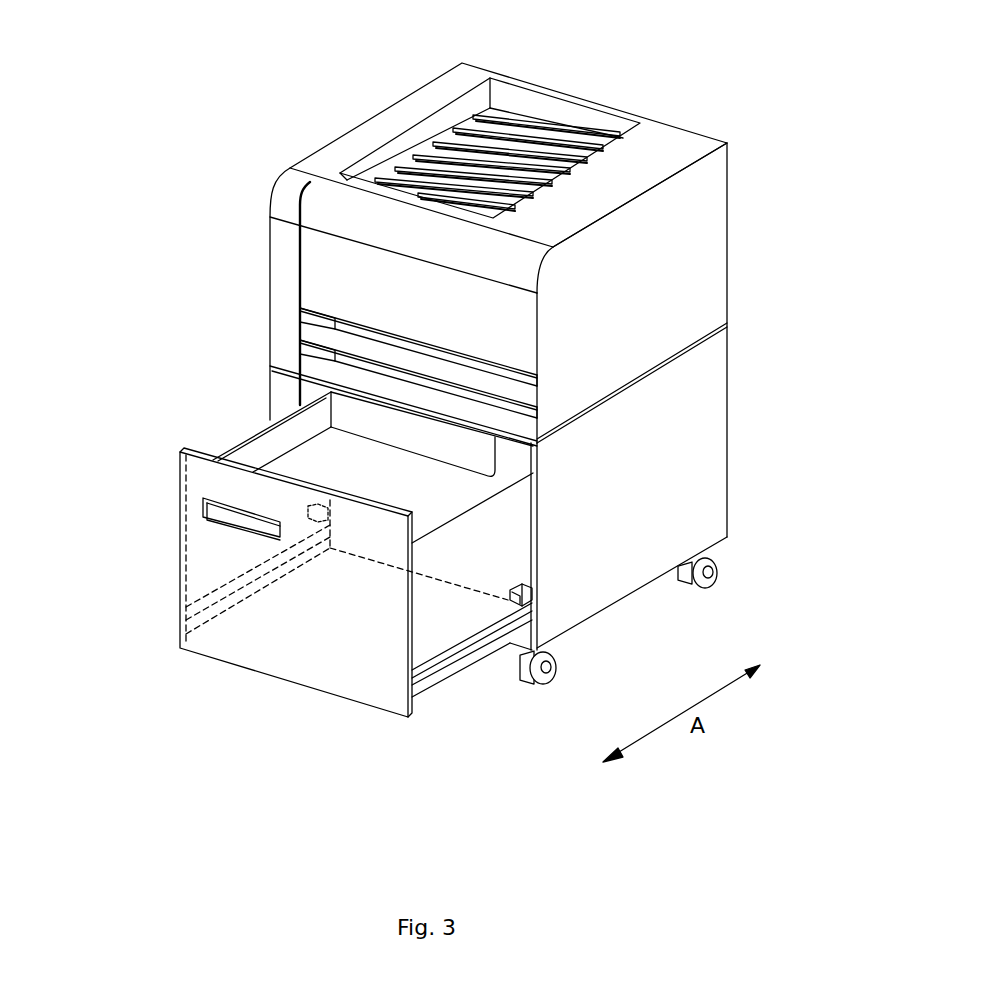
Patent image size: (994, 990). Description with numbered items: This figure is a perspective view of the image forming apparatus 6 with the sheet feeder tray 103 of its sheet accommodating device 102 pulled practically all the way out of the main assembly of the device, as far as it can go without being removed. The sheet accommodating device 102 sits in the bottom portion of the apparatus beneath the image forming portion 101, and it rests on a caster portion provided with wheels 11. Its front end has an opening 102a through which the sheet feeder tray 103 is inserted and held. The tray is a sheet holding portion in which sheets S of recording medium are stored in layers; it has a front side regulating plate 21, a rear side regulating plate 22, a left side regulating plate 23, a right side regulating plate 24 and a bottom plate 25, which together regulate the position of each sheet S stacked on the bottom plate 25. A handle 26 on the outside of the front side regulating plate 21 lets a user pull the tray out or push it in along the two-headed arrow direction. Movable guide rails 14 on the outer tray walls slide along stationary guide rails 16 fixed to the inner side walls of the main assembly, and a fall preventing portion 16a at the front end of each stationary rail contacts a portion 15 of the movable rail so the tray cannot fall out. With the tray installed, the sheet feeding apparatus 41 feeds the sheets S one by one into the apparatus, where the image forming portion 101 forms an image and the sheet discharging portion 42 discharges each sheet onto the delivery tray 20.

The image forming apparatus 6 is at (685, 74).
The caster 11 is at (713, 572).
The movable guide rail 14 is at (205, 602).
The portion of movable guide rail 15 is at (328, 522).
The stationary guide rail 16 is at (318, 512).
The fall preventing portion 16a is at (312, 512).
The delivery tray 20 is at (543, 137).
The front side regulating plate 21 is at (270, 467).
The rear side regulating plate 22 is at (300, 407).
The left side regulating plate 23 is at (277, 438).
The right side regulating plate 24 is at (472, 662).
The bottom plate 25 is at (447, 680).
The handle 26 is at (250, 520).
The sheet feeding apparatus 41 is at (520, 457).
The sheet discharging portion 42 is at (450, 118).
The image forming portion 101 is at (700, 263).
The sheet accommodating device 102 is at (697, 477).
The opening 102a is at (312, 388).
The sheet feeder tray 103 is at (118, 385).
The sheet S is at (438, 503).